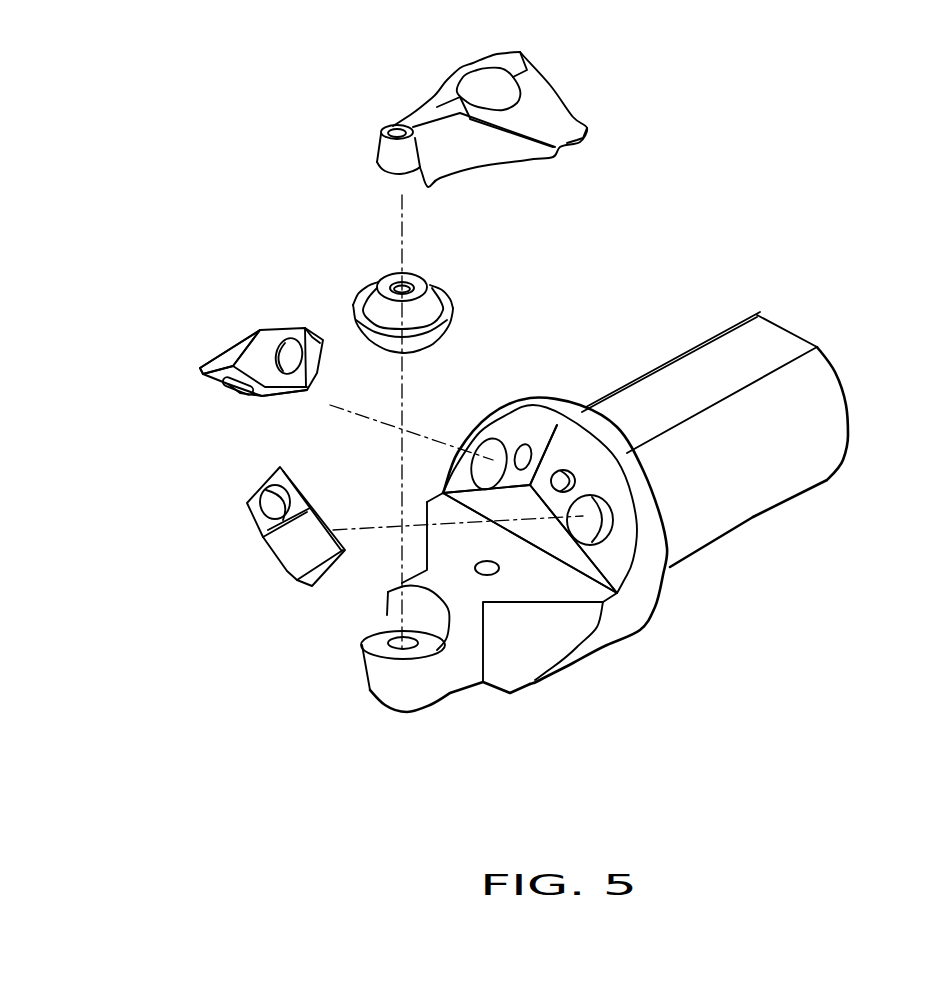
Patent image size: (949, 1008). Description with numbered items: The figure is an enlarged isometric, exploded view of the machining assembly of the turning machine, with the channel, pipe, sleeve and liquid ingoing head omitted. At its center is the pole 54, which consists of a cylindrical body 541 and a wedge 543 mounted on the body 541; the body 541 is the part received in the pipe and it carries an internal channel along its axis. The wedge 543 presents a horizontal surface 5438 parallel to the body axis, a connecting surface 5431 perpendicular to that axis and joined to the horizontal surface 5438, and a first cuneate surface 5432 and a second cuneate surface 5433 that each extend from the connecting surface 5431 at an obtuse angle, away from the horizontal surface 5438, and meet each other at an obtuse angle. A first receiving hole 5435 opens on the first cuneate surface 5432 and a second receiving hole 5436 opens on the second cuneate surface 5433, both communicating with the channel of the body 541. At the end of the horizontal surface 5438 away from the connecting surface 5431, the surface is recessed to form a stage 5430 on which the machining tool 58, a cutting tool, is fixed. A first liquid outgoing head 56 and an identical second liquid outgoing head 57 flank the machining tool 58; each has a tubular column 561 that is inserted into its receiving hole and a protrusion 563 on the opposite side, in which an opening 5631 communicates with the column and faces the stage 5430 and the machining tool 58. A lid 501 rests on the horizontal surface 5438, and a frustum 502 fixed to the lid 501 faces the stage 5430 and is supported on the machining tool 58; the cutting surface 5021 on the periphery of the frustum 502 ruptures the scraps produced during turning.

The lid 501 is at (543, 107).
The frustum 502 is at (433, 284).
The cutting surface 5021 is at (419, 311).
The machining tool 58 is at (360, 305).
The first liquid outgoing head 56 is at (245, 323).
The protrusion 563 is at (227, 353).
The protrusion 5631 is at (228, 383).
The column 561 is at (283, 397).
The second liquid outgoing head 57 is at (300, 552).
The pole 54 is at (823, 412).
The body 541 is at (780, 347).
The wedge 543 is at (886, 546).
The stage 5430 is at (392, 628).
The connecting surface 5431 is at (547, 537).
The first cuneate surface 5432 is at (538, 428).
The second cuneate surface 5433 is at (600, 518).
The first receiving hole 5435 is at (497, 452).
The second receiving hole 5436 is at (593, 540).
The horizontal surface 5438 is at (457, 594).